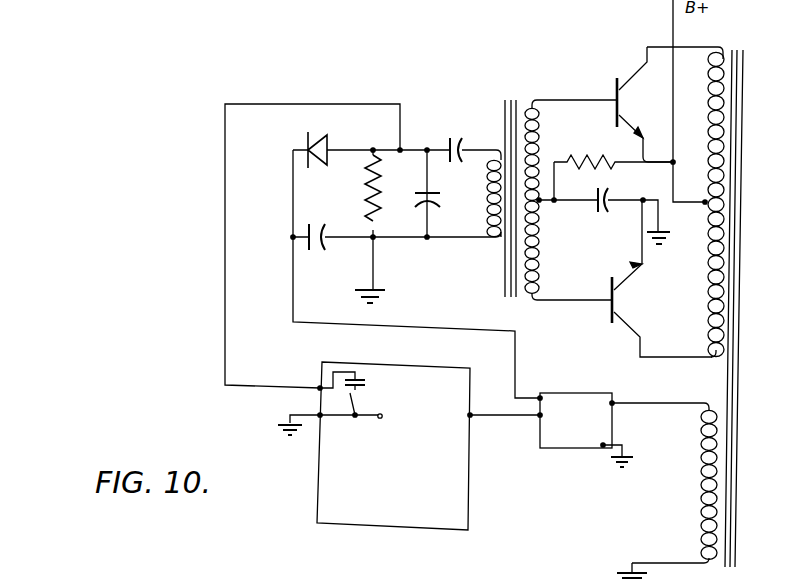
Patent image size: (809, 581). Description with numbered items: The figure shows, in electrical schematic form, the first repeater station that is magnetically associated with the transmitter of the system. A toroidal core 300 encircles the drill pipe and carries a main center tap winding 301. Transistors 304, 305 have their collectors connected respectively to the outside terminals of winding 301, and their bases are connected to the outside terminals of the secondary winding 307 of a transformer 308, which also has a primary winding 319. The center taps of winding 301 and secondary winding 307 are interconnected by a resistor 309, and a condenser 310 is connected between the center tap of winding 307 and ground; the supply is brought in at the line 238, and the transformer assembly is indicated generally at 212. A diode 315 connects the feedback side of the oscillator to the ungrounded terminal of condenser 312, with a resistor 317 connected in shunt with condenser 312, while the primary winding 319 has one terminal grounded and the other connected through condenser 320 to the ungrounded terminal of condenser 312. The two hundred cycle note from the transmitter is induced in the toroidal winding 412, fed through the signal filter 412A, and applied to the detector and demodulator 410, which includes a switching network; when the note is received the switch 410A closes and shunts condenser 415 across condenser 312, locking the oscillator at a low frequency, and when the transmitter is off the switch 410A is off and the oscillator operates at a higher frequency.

The transformer 212 is at (526, 167).
The B+ supply line 238 is at (671, 24).
The toroidal core 300 is at (740, 43).
The main center tap winding 301 is at (705, 310).
The transistor 304 is at (614, 88).
The transistor 305 is at (610, 276).
The secondary winding 307 is at (547, 93).
The transformer 308 is at (502, 124).
The resistor 309 is at (618, 153).
The condenser 310 is at (598, 213).
The condenser 312 is at (446, 204).
The diode 315 is at (328, 143).
The resistor 317 is at (365, 193).
The primary winding 319 is at (489, 191).
The condenser 320 is at (454, 138).
The detector and demodulator 410 is at (409, 433).
The switch 410A is at (365, 401).
The toroidal winding 412 is at (700, 518).
The signal filter 412A is at (568, 448).
The condenser 415 is at (367, 383).